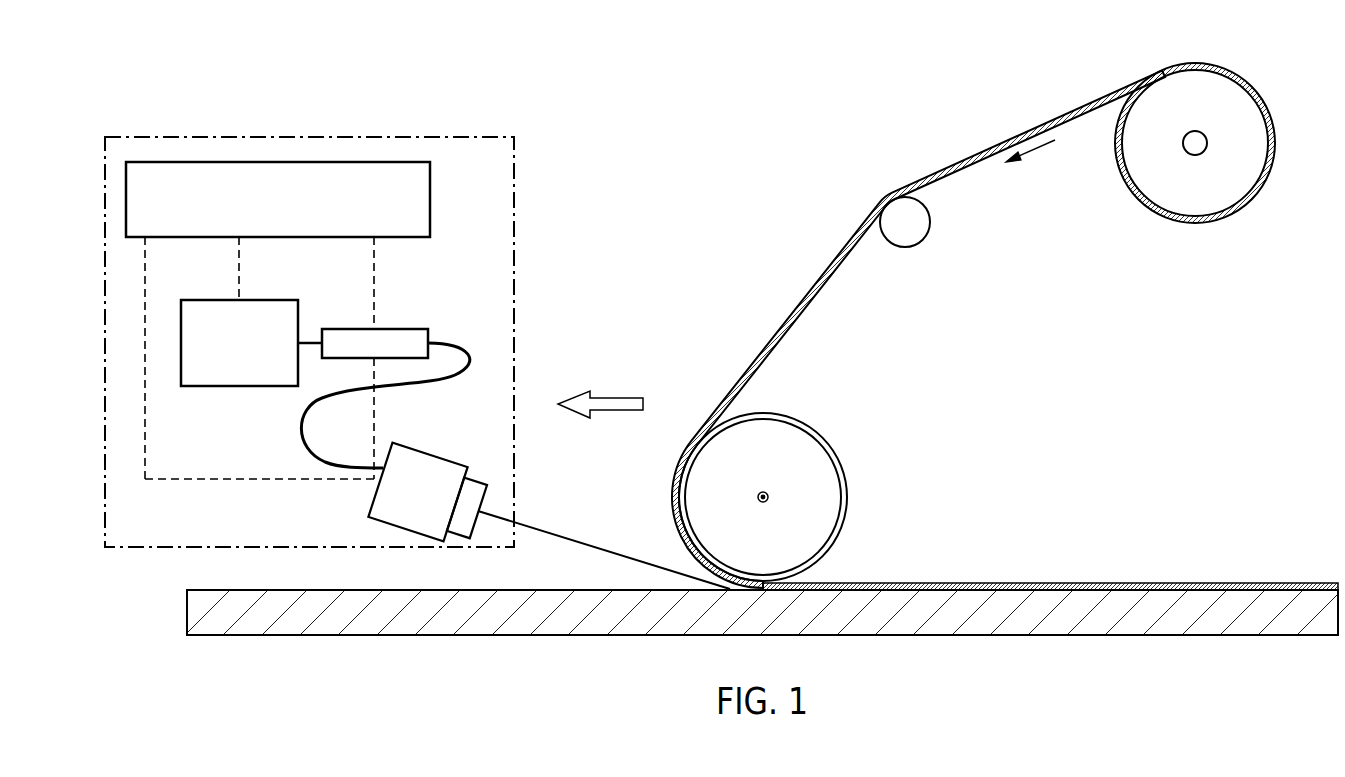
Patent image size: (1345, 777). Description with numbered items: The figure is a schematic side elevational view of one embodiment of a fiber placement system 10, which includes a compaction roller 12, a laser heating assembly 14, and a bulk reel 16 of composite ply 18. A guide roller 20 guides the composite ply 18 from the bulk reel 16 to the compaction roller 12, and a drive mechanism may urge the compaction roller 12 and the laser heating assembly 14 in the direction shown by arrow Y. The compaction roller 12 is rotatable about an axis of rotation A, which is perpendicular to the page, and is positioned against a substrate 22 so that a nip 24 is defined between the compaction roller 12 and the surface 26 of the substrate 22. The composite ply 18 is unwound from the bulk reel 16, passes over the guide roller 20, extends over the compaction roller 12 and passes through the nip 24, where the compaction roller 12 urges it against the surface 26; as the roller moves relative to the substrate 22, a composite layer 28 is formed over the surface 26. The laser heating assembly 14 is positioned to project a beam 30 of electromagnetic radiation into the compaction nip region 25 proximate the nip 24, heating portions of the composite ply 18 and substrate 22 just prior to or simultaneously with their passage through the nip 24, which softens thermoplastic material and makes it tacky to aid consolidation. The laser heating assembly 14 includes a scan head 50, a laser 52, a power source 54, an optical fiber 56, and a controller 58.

The fiber placement system 10 is at (492, 57).
The compaction roller 12 is at (846, 497).
The laser heating assembly 14 is at (514, 166).
The bulk reel 16 is at (1275, 143).
The composite ply 18 is at (1011, 139).
The guide roller 20 is at (930, 222).
The substrate 22 is at (356, 618).
The nip 24 is at (655, 541).
The compaction nip region 25 is at (590, 524).
The surface 26 is at (337, 590).
The composite layer 28 is at (1250, 583).
The beam 30 is at (541, 534).
The scan head 50 is at (437, 457).
The laser 52 is at (414, 329).
The power source 54 is at (241, 386).
The optical fiber 56 is at (470, 345).
The controller 58 is at (430, 205).
The axis of rotation A is at (764, 492).
The arrow Y is at (616, 397).